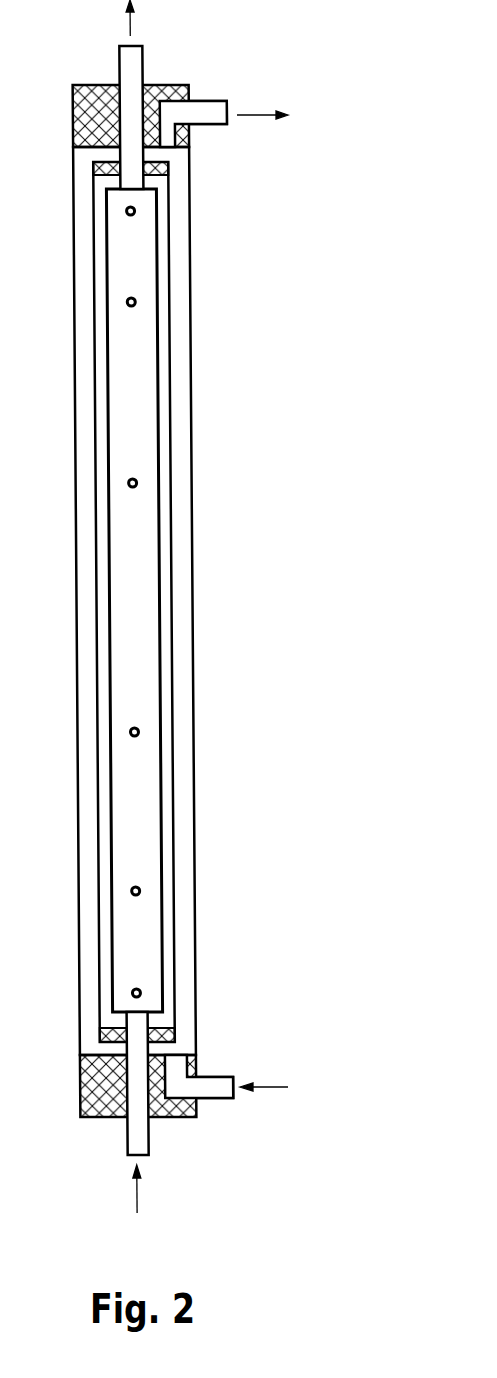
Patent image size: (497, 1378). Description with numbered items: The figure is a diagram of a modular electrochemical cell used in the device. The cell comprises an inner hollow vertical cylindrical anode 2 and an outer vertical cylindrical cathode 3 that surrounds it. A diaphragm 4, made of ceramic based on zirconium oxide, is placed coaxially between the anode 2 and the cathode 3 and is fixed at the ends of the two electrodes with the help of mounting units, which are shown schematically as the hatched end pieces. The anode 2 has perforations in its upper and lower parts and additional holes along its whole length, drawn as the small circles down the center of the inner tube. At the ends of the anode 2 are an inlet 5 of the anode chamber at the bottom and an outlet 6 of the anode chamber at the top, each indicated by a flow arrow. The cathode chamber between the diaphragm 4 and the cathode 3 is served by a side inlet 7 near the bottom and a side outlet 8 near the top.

The anode 2 is at (189, 600).
The cathode 3 is at (172, 601).
The diaphragm 4 is at (183, 602).
The inlet of the anode chamber 5 is at (202, 1112).
The outlet of the anode chamber 6 is at (195, 94).
The inlet of the cathode chamber 7 is at (221, 1100).
The outlet of the cathode chamber 8 is at (216, 151).